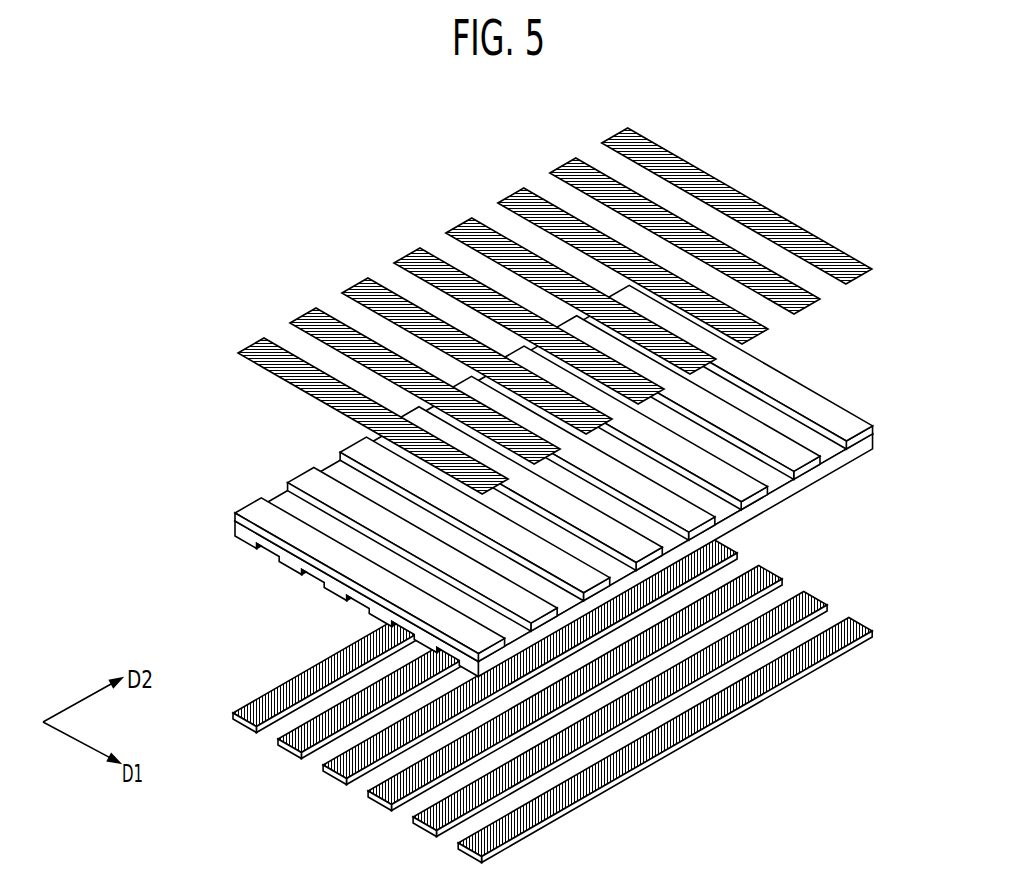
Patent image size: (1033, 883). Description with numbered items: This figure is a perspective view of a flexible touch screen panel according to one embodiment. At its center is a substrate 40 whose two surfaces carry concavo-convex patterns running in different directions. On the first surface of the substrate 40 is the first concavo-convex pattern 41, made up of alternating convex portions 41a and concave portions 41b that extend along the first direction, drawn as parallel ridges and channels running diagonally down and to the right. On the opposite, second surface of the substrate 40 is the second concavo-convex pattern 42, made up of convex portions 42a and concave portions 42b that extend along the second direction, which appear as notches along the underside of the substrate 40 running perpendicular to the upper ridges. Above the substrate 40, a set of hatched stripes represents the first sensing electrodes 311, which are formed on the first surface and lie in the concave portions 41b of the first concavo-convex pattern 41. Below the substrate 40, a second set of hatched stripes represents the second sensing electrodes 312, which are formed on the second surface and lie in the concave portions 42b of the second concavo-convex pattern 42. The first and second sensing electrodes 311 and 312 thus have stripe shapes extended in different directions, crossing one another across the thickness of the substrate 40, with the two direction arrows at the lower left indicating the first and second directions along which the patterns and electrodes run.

The first sensing electrodes 311 is at (258, 342).
The second sensing electrodes 312 is at (287, 740).
The substrate 40 is at (515, 480).
The first concavo-convex pattern 41 is at (517, 473).
The convex portions 41a is at (305, 478).
The concave portions 41b is at (284, 497).
The second concavo-convex pattern 42 is at (326, 599).
The convex portions 42a is at (300, 565).
The concave portions 42b is at (260, 543).